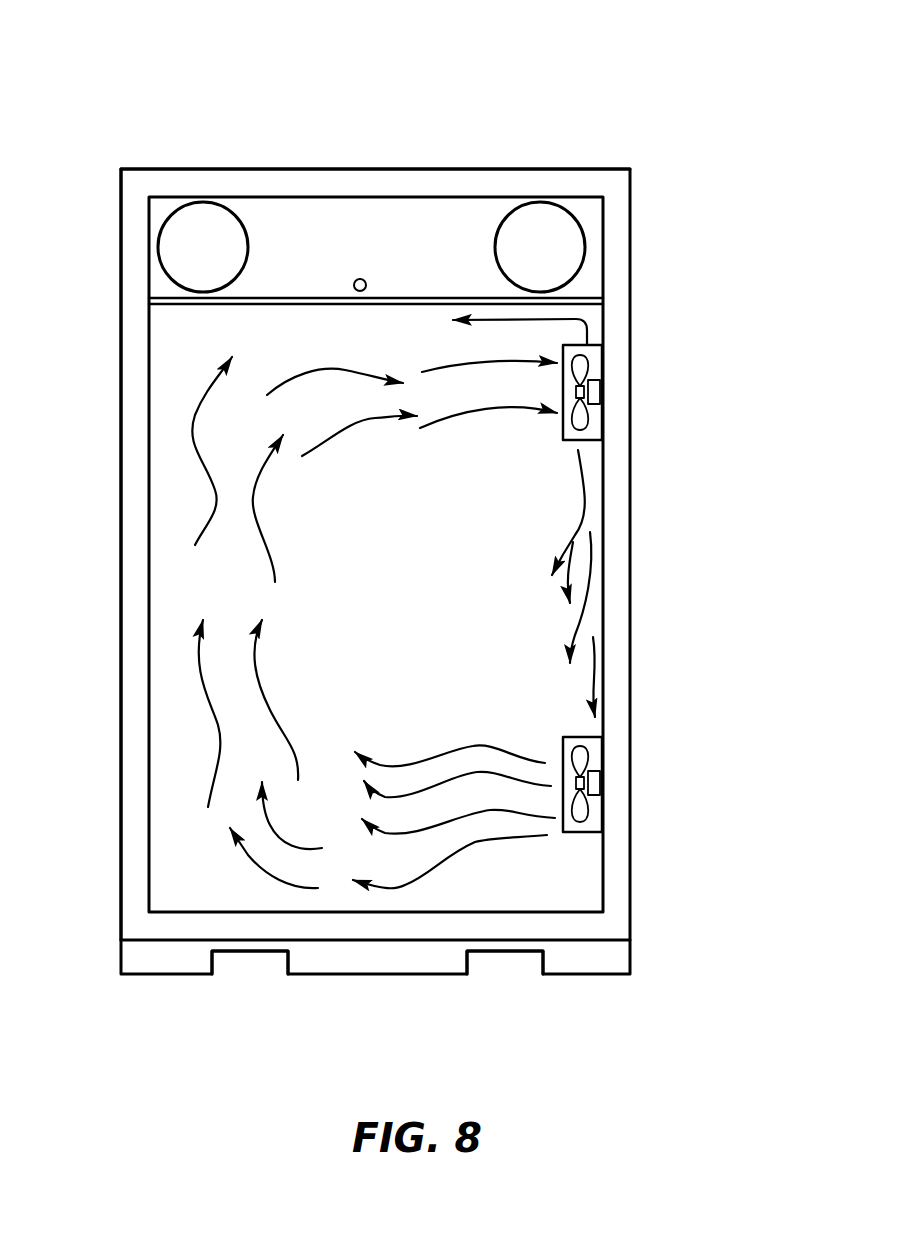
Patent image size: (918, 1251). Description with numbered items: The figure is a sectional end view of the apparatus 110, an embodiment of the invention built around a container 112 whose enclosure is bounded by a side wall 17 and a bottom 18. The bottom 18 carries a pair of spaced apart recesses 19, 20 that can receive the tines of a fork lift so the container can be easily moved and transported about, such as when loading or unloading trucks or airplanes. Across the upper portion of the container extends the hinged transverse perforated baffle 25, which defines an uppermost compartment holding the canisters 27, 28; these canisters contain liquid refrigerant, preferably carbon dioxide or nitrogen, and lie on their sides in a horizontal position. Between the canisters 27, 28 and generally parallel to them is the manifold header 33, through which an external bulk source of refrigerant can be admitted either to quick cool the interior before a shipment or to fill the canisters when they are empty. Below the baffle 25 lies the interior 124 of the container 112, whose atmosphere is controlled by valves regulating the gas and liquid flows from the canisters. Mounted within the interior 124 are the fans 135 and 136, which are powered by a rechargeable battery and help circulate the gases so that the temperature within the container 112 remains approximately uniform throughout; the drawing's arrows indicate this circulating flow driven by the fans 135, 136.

The apparatus 110 is at (435, 117).
The side wall 17 is at (533, 170).
The container 112 is at (121, 627).
The hinged transverse perforated baffle 25 is at (305, 305).
The canister 27 is at (182, 248).
The canister 28 is at (572, 252).
The manifold header 33 is at (364, 280).
The interior 124 is at (448, 615).
The fan 135 is at (580, 427).
The fan 136 is at (583, 827).
The bottom 18 is at (632, 957).
The recess 19 is at (250, 973).
The recess 20 is at (510, 962).